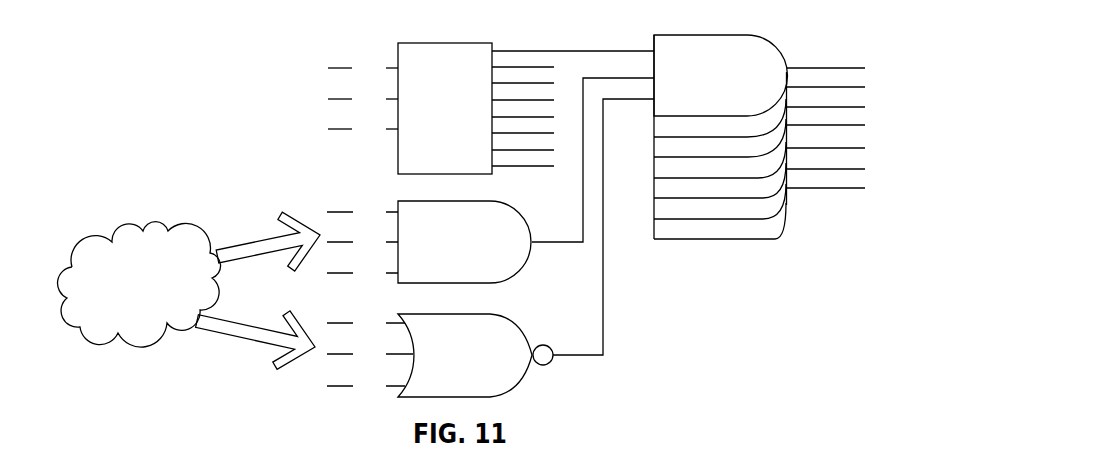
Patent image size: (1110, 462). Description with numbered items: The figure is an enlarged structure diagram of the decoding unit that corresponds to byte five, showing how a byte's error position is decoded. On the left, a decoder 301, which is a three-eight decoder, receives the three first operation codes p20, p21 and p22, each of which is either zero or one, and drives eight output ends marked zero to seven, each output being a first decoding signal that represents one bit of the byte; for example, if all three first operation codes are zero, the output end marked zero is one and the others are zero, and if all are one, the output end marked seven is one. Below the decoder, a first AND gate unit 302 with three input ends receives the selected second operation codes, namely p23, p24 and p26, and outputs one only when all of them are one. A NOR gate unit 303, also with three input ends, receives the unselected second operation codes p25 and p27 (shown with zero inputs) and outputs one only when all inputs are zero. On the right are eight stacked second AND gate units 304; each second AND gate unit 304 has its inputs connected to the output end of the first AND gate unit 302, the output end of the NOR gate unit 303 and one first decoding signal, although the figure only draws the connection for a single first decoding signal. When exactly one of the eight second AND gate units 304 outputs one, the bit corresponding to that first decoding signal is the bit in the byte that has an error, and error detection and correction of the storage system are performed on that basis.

The decoder 301 is at (442, 109).
The first AND gate unit 302 is at (442, 246).
The NOR gate unit 303 is at (447, 363).
The second AND gate unit 304 is at (697, 81).
The first operation code p20 is at (348, 67).
The first operation code p21 is at (348, 98).
The first operation code p22 is at (348, 128).
The selected second operation code p23 is at (112, 265).
The selected second operation code p24 is at (160, 255).
The unselected second operation code p25 is at (93, 297).
The selected second operation code p26 is at (160, 297).
The unselected second operation code p27 is at (128, 315).